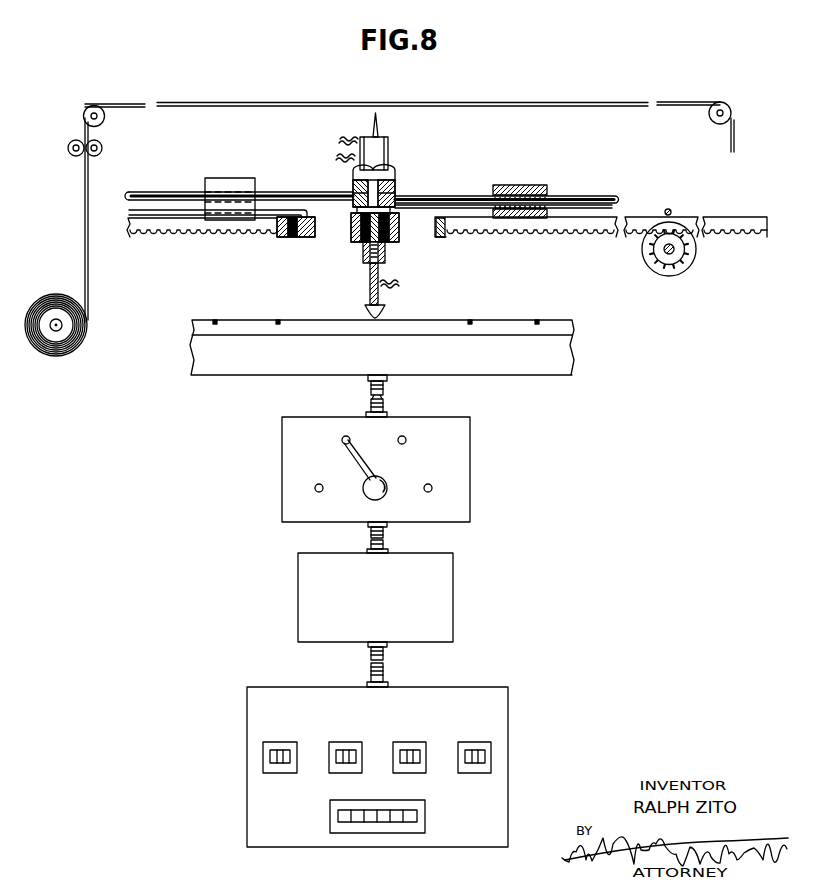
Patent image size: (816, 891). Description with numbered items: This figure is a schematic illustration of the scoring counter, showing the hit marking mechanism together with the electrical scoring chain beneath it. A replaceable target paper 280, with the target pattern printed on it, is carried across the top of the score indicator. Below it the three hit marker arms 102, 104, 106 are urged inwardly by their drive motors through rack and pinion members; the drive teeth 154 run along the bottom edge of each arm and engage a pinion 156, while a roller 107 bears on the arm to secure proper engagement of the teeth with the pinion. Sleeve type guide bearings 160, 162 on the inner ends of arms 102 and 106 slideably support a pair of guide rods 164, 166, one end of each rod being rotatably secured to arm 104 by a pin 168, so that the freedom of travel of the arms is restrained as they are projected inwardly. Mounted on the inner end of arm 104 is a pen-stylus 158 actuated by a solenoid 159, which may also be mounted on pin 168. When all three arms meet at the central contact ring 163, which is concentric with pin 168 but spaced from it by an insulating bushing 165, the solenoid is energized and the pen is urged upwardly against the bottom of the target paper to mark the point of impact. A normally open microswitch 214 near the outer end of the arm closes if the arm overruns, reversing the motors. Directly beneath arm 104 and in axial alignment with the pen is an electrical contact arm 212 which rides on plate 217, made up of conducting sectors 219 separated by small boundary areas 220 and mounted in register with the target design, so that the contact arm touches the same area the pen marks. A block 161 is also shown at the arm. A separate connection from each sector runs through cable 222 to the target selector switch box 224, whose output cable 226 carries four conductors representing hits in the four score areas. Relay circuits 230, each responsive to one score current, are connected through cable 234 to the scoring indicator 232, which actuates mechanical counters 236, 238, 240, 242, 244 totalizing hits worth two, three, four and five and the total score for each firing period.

The target paper 280 is at (552, 102).
The pen-stylus 158 is at (378, 129).
The solenoid 159 is at (384, 161).
The pin 168 is at (366, 190).
The arm 104 is at (388, 186).
The guide rod 164 is at (300, 192).
The sleeve-type guide bearing 160 is at (230, 182).
The guide rod 166 is at (469, 198).
The sleeve-type guide bearing 162 is at (534, 185).
The roller 107 is at (670, 209).
The arm 106 is at (530, 224).
The arm 102 is at (168, 224).
The drive teeth 154 is at (224, 240).
The stop block 161 is at (290, 240).
The normally open microswitch 214 is at (363, 255).
The electrical contact arm 212 is at (370, 285).
The central contact ring 163 is at (399, 239).
The insulating bushing 165 is at (386, 242).
The pinion 156 is at (667, 261).
The conducting sectors 219 is at (436, 320).
The boundary area 220 is at (537, 318).
The plate 217 is at (577, 320).
The cable 222 is at (385, 407).
The target selector switch box 224 is at (455, 447).
The output cable 226 is at (389, 545).
The relay circuits 230 is at (440, 585).
The cable 234 is at (388, 677).
The scoring indicator 232 is at (497, 712).
The mechanical counter 236 is at (283, 768).
The mechanical counter 238 is at (343, 768).
The mechanical counter 240 is at (412, 768).
The mechanical counter 242 is at (477, 768).
The mechanical counter 244 is at (417, 827).